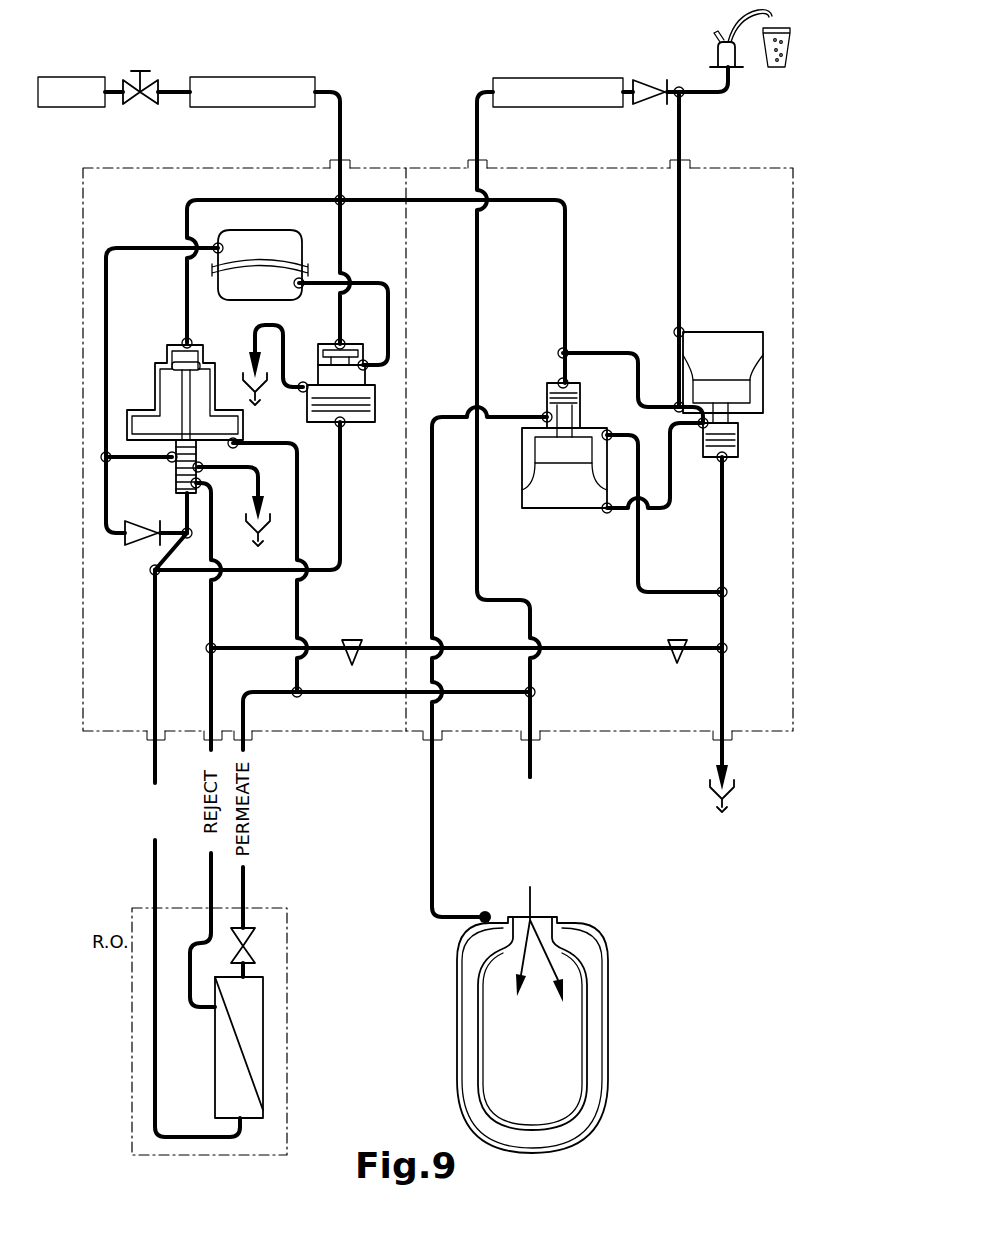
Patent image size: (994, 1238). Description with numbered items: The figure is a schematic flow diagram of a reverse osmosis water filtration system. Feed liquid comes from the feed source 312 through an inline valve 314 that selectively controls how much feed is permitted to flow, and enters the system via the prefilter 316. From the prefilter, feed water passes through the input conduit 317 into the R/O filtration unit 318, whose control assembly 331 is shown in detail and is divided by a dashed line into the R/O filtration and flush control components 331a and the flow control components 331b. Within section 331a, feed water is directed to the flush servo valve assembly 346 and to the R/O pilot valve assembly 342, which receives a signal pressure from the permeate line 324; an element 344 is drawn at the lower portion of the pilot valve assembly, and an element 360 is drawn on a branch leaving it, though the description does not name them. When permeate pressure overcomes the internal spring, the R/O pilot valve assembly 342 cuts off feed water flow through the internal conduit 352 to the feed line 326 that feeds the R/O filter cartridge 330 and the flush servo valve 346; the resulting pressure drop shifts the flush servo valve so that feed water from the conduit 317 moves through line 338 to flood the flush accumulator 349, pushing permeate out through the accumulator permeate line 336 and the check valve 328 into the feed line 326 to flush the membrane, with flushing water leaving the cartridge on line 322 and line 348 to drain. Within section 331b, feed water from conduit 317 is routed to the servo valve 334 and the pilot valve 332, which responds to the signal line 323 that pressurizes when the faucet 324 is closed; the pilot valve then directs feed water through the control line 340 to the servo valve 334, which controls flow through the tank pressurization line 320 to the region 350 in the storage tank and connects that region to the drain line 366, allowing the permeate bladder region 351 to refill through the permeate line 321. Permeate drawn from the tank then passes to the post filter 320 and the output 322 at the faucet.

The feed source 312 is at (86, 74).
The inline valve 314 is at (140, 105).
The prefilter 316 is at (285, 75).
The input conduit 317 is at (338, 112).
The R/O filtration unit 318 is at (374, 165).
The post filter 320 is at (518, 77).
The permeate line 321 is at (533, 755).
The output 322 is at (720, 95).
The signal line 323 is at (680, 125).
The faucet 324 is at (715, 36).
The feed line 326 is at (155, 885).
The check valve 328 is at (142, 548).
The R/O filter cartridge 330 is at (346, 637).
The control assembly 331 is at (793, 182).
The R/O filtration and flush control components 331a is at (143, 646).
The flow control components 331b is at (788, 646).
The pilot valve 332 is at (752, 340).
The servo valve 334 is at (543, 495).
The accumulator permeate line 336 is at (137, 246).
The line 338 is at (405, 300).
The control line 340 is at (677, 486).
The R/O pilot valve assembly 342 is at (150, 395).
The regulator spring 344 is at (175, 480).
The flush servo valve assembly 346 is at (360, 405).
The line 348 is at (215, 598).
The flush accumulator 349 is at (305, 243).
The region 350 is at (585, 1110).
The permeate bladder region 351 is at (558, 1088).
The internal conduit 352 is at (187, 402).
The drain outlet 360 is at (232, 470).
The drain line 366 is at (722, 677).